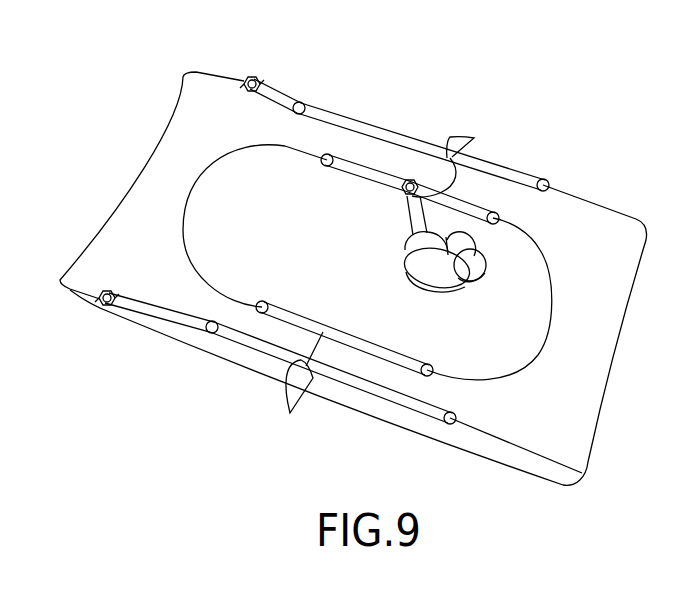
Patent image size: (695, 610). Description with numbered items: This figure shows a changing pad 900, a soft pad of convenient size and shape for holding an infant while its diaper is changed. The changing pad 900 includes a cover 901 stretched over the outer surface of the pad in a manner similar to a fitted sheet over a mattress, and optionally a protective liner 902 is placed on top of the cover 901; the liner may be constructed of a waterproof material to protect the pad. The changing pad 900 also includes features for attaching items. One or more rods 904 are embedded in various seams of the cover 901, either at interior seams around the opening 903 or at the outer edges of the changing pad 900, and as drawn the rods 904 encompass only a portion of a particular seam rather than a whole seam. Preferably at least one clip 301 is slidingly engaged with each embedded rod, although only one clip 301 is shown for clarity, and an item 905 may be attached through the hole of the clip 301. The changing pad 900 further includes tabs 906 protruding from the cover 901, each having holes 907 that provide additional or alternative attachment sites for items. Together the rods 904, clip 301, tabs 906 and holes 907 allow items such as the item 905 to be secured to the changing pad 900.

The changing pad 900 is at (170, 140).
The cover 901 is at (623, 228).
The protective liner 902 is at (491, 331).
The opening 903 is at (523, 252).
The rods 904 is at (476, 138).
The item 905 is at (406, 252).
The tabs 906 is at (252, 77).
The holes 907 is at (262, 83).
The clip 301 is at (401, 189).